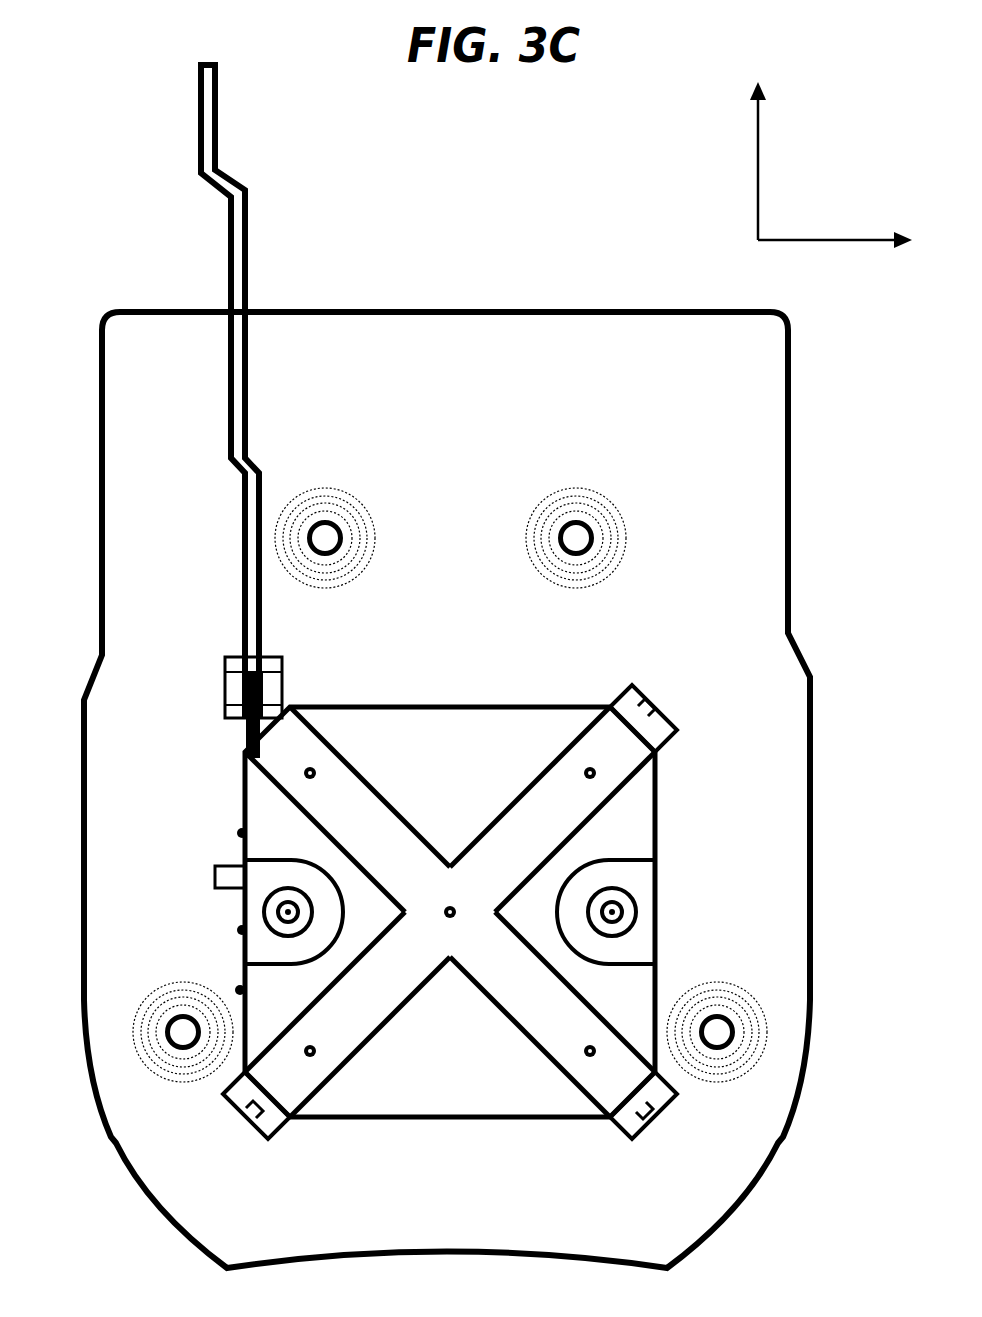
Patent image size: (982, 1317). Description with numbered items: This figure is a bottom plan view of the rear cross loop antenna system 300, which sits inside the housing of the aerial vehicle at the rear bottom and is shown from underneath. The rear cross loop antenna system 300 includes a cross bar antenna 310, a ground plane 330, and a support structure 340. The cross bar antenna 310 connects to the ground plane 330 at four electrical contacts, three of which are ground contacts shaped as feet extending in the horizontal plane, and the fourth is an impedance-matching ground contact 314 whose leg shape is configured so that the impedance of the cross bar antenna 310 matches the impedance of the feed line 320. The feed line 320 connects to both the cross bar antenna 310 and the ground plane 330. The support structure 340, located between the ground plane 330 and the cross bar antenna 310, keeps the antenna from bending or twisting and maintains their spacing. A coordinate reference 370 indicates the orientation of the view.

The rear cross loop antenna system 300 is at (503, 224).
The cross bar antenna 310 is at (558, 808).
The impedance-matching ground contact 314 is at (213, 880).
The feed line 320 is at (235, 235).
The ground plane 330 is at (460, 1220).
The support structure 340 is at (400, 1095).
The coordinate axes 370 is at (819, 165).